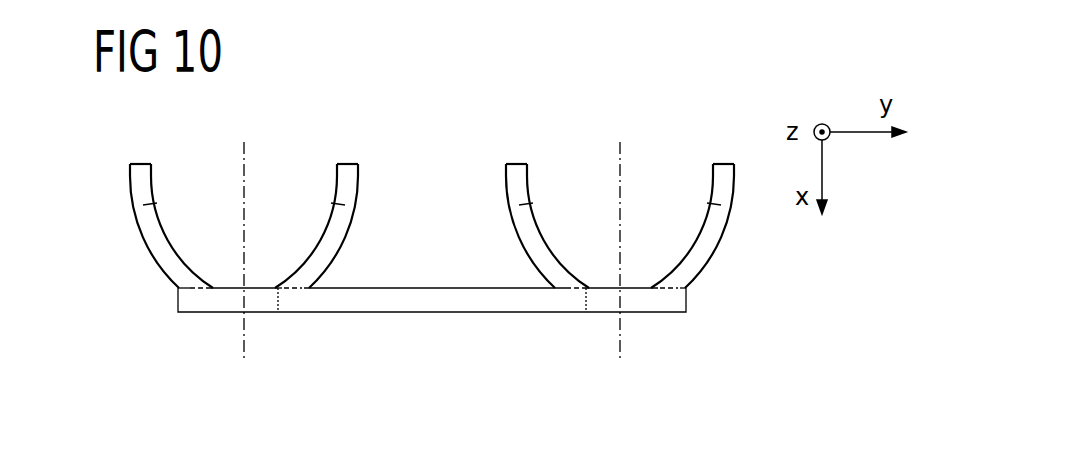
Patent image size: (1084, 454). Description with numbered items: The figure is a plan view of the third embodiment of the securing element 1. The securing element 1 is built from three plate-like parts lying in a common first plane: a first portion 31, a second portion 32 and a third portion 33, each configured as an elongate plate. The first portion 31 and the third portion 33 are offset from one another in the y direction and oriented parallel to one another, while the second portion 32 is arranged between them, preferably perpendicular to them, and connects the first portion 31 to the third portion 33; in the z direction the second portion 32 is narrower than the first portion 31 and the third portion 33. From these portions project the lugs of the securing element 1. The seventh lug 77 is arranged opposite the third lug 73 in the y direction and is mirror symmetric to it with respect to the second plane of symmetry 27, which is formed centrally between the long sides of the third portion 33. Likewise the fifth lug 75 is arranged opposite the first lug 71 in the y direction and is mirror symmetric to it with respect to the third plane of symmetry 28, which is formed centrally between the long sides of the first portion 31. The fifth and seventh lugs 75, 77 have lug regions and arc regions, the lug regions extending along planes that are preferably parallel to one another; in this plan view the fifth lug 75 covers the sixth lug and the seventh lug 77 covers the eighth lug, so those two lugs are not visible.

The securing element 1 is at (436, 150).
The second plane of symmetry 27 is at (244, 143).
The third plane of symmetry 28 is at (620, 143).
The first portion 31 is at (661, 305).
The second portion 32 is at (437, 305).
The third portion 33 is at (207, 305).
The first lug 71 is at (523, 228).
The third lug 73 is at (342, 228).
The fifth lug 75 is at (712, 246).
The seventh lug 77 is at (152, 246).